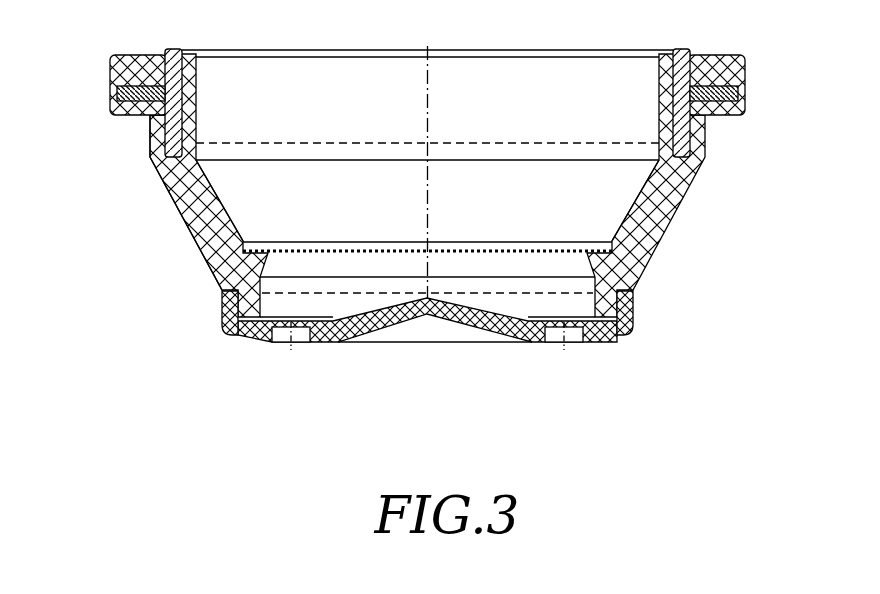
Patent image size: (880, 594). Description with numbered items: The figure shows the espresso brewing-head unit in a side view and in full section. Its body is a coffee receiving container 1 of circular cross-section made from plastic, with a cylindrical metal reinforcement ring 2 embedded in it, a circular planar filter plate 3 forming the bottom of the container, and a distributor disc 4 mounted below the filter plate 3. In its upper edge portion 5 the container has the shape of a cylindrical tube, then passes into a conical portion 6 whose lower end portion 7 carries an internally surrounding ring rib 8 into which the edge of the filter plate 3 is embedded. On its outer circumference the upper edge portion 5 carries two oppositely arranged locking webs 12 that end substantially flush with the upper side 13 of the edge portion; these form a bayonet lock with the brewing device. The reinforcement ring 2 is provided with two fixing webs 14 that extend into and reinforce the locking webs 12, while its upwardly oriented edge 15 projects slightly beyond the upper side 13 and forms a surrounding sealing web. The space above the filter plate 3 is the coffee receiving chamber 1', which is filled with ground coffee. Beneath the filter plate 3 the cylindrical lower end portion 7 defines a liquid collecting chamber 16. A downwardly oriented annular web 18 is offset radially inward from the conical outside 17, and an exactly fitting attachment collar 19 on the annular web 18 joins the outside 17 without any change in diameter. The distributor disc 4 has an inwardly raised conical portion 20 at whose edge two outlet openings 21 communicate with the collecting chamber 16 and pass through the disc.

The coffee receiving container 1 is at (490, 185).
The coffee receiving chamber 1' is at (427, 151).
The reinforcement ring 2 is at (171, 52).
The filter plate 3 is at (289, 247).
The distributor disc 4 is at (342, 344).
The upper edge portion 5 is at (175, 152).
The conical portion 6 is at (190, 212).
The lower end portion 7 is at (228, 265).
The ring rib 8 is at (300, 257).
The locking webs 12 is at (110, 66).
The upper side 13 is at (705, 55).
The fixing webs 14 is at (119, 94).
The upwardly oriented edge 15 is at (673, 51).
The liquid collecting chamber 16 is at (507, 298).
The conical outside 17 is at (657, 257).
The annular web 18 is at (593, 344).
The attachment collar 19 is at (222, 308).
The conical portion 20 is at (448, 298).
The outlet openings 21 is at (291, 345).